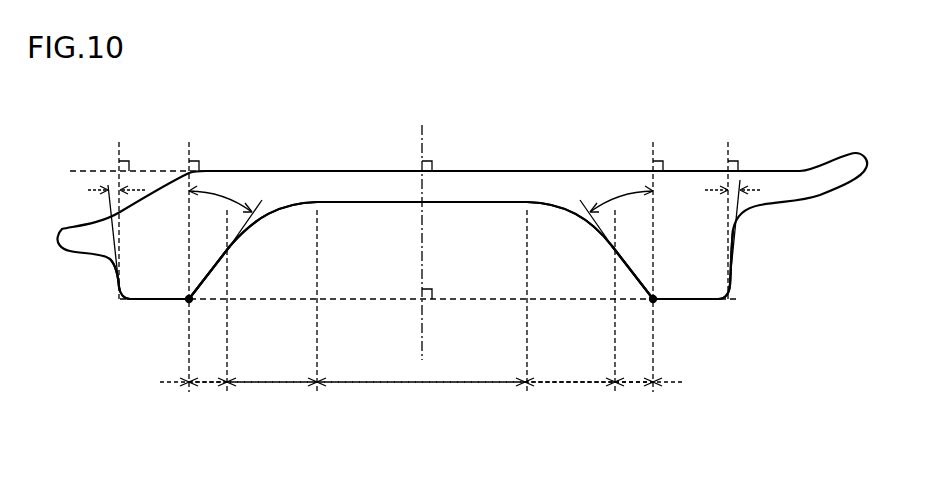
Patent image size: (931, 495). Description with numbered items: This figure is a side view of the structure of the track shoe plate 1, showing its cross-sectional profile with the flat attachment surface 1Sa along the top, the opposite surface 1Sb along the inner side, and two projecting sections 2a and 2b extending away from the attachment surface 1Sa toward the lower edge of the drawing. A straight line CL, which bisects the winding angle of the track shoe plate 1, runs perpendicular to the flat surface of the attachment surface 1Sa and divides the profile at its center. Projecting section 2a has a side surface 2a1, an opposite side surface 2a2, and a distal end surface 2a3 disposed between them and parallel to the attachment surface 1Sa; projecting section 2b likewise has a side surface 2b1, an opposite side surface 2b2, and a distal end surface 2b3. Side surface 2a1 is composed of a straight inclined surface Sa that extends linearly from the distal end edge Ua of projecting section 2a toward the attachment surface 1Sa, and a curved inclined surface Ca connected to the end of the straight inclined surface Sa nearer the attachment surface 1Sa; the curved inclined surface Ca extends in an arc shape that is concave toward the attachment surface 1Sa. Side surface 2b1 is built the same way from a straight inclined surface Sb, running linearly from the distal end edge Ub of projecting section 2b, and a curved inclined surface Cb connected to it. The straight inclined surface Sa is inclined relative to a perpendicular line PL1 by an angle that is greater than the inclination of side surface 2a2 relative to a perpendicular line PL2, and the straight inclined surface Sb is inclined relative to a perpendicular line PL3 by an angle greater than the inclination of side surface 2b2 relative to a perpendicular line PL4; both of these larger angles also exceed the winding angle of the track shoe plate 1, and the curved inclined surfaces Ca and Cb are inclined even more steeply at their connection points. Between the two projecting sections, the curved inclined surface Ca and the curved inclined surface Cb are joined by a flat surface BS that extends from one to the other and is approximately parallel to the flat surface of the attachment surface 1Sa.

The track shoe plate 1 is at (782, 183).
The attachment surface 1Sa is at (484, 170).
The inner surface of panel 1Sb is at (484, 204).
The projecting section 2a is at (712, 283).
The side surface 2a1 is at (658, 407).
The side surface 2a2 is at (735, 262).
The distal end surface 2a3 is at (690, 301).
The projecting section 2b is at (132, 283).
The side surface 2b1 is at (296, 407).
The side surface 2b2 is at (117, 280).
The distal end surface 2b3 is at (153, 301).
The distal end edge Ua is at (654, 302).
The distal end edge Ub is at (189, 302).
The perpendicular line PL1 is at (653, 257).
The perpendicular line PL2 is at (728, 211).
The perpendicular line PL3 is at (189, 257).
The perpendicular line PL4 is at (119, 211).
The straight line CL is at (422, 232).
The straight inclined surface Sa is at (634, 395).
The straight inclined surface Sb is at (208, 395).
The curved inclined surface Ca is at (570, 395).
The curved inclined surface Cb is at (272, 395).
The flat surface BS is at (421, 395).